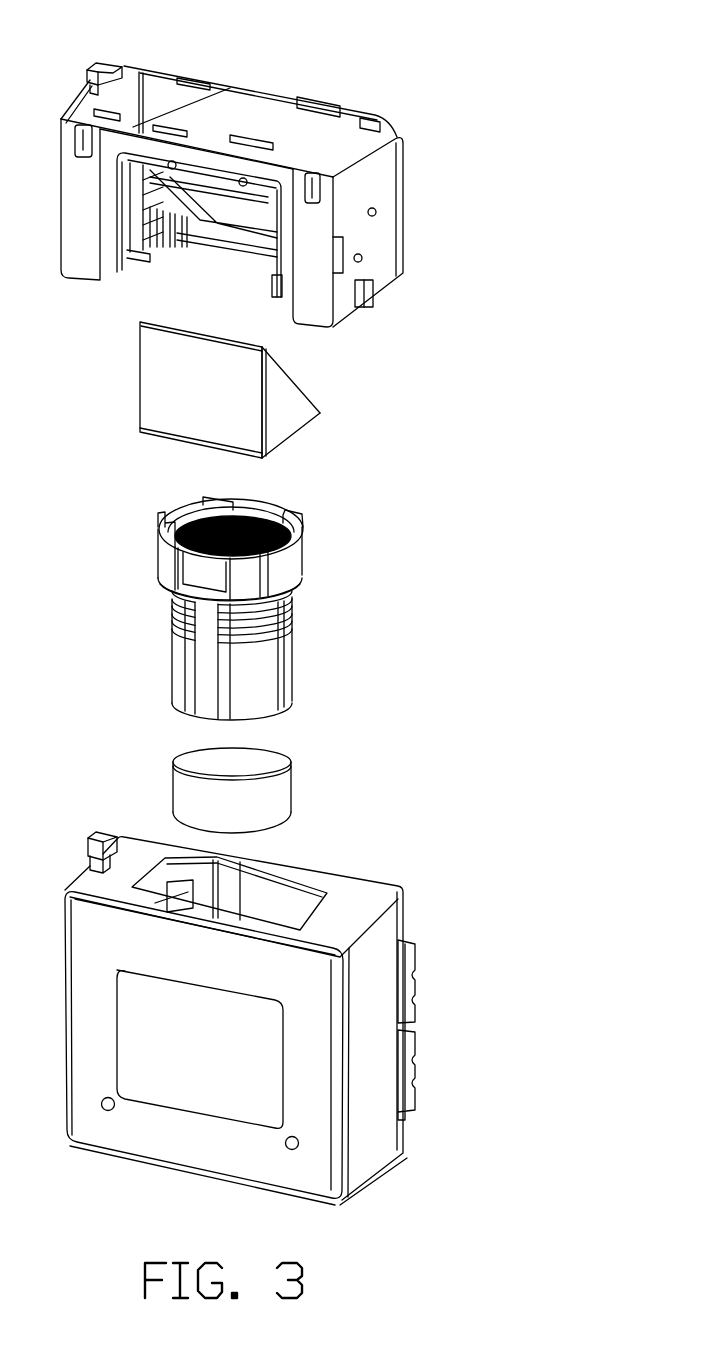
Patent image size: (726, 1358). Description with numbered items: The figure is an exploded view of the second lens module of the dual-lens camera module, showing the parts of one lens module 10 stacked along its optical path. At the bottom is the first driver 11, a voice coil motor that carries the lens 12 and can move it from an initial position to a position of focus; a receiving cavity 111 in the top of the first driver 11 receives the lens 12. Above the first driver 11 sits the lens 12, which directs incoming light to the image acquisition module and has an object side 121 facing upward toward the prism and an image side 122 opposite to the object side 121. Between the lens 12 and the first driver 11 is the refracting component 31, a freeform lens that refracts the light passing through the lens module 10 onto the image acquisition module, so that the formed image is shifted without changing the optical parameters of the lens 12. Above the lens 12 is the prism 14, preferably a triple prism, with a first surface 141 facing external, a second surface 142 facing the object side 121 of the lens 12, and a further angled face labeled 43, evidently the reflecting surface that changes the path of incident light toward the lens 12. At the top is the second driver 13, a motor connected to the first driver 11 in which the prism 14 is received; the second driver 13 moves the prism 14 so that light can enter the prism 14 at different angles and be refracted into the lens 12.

The lens module 10 is at (260, 21).
The first driver 11 is at (278, 1018).
The receiving cavity 111 is at (283, 890).
The lens 12 is at (209, 614).
The object side 121 is at (178, 540).
The image side 122 is at (185, 712).
The second driver 13 is at (317, 298).
The prism 14 is at (230, 407).
The first surface 141 is at (163, 393).
The second surface 142 is at (297, 455).
The reflective surface 43 is at (300, 378).
The refracting component 31 is at (185, 777).